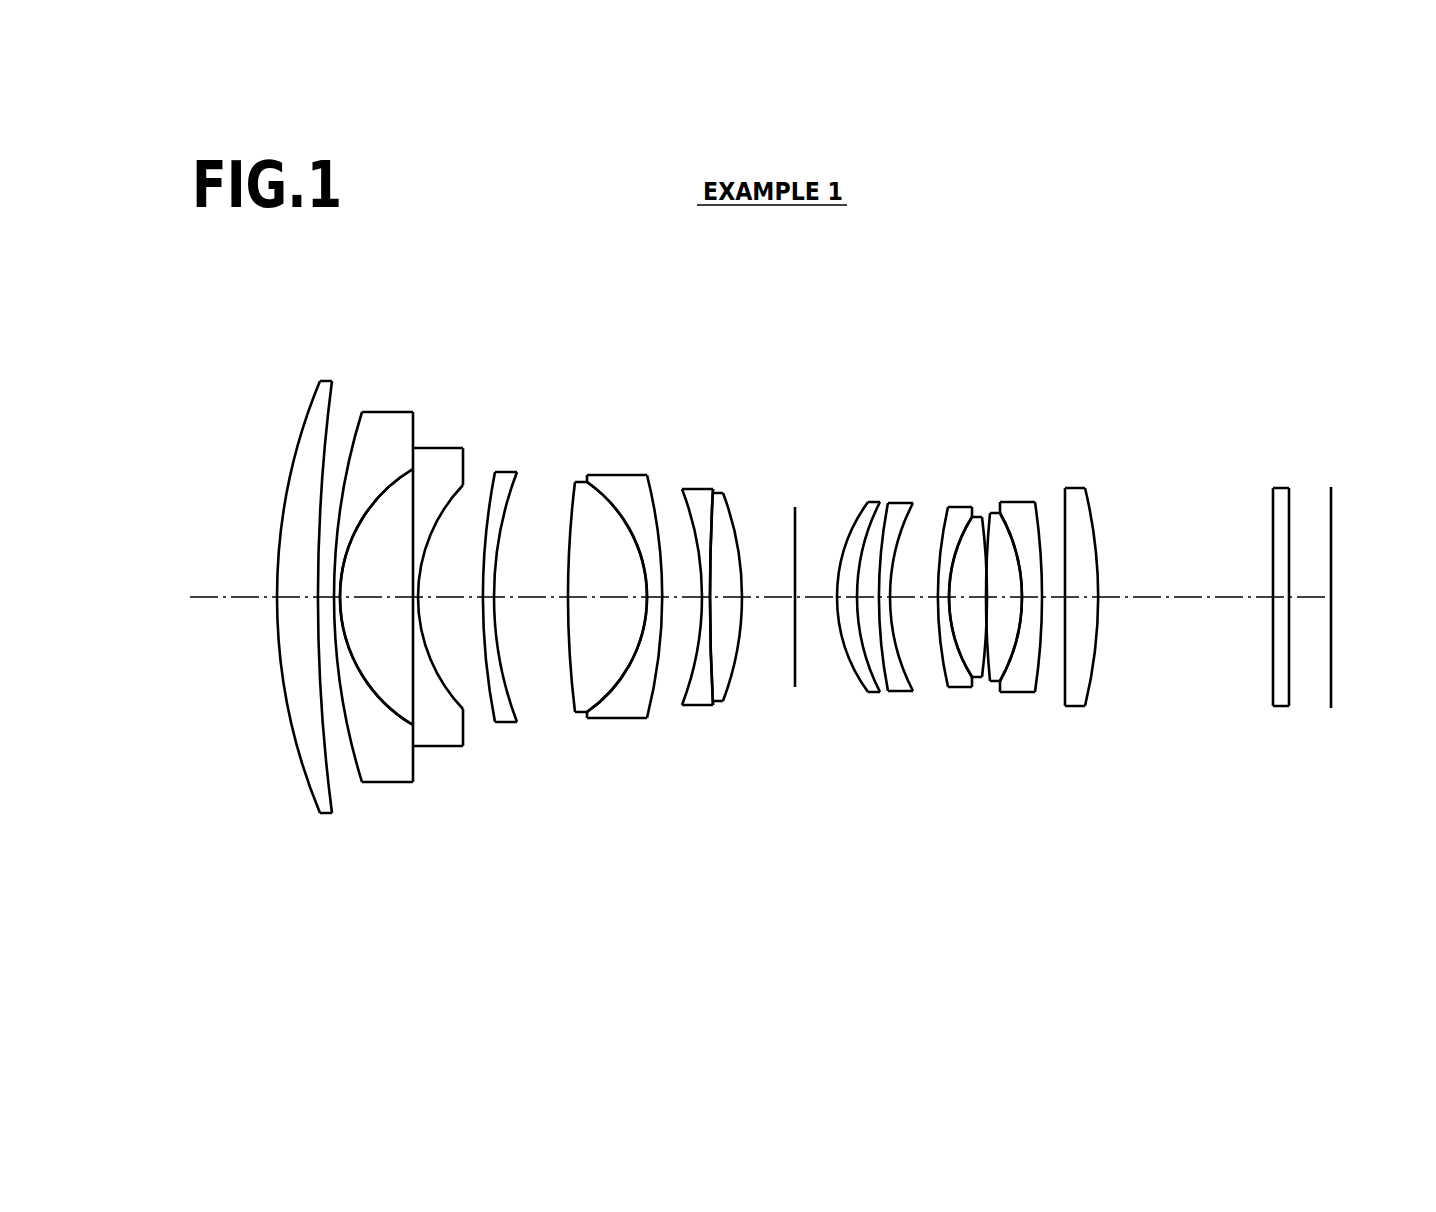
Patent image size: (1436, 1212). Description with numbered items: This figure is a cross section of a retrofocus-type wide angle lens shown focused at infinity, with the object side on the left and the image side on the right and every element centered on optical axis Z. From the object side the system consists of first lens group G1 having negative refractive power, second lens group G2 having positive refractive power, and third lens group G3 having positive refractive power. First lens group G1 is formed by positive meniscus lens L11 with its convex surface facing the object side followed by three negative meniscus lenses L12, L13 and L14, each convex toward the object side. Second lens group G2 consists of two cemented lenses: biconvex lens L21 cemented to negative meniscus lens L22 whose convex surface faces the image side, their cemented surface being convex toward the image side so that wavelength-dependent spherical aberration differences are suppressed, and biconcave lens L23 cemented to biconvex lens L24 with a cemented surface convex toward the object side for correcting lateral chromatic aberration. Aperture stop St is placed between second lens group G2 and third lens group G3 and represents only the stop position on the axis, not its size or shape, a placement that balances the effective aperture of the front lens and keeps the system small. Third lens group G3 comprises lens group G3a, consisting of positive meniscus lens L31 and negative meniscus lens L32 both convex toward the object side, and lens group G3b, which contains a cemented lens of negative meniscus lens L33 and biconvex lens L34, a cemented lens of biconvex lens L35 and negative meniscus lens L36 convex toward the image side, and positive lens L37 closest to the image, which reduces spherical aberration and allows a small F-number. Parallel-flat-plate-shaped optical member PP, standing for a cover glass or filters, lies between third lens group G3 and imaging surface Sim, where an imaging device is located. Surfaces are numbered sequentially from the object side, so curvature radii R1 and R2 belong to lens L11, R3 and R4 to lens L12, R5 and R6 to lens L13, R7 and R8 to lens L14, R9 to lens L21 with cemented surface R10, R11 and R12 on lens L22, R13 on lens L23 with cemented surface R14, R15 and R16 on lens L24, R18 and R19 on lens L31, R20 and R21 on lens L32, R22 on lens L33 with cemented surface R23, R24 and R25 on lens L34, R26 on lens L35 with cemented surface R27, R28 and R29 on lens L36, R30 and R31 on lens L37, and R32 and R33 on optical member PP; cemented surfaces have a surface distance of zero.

The optical axis Z is at (242, 592).
The first lens group G1 is at (472, 278).
The second lens group G2 is at (702, 307).
The third lens group G3 is at (1087, 307).
The 3a-th lens group G3a is at (882, 345).
The 3b-th lens group G3b is at (1087, 345).
The positive meniscus lens L11 is at (327, 381).
The negative meniscus lens L12 is at (378, 412).
The negative meniscus lens L13 is at (440, 448).
The negative meniscus lens L14 is at (500, 472).
The biconvex lens L21 is at (577, 482).
The negative meniscus lens L22 is at (615, 475).
The biconcave lens L23 is at (697, 489).
The biconvex lens L24 is at (718, 493).
The positive meniscus lens L31 is at (874, 502).
The negative meniscus lens L32 is at (900, 503).
The negative meniscus lens L33 is at (960, 507).
The biconvex lens L34 is at (977, 517).
The biconvex lens L35 is at (995, 513).
The negative meniscus lens L36 is at (1018, 502).
The lens having positive refractive power L37 is at (1073, 488).
The aperture stop St is at (795, 507).
The optical member PP is at (1280, 488).
The imaging surface Sim is at (1331, 488).
The curvature radius of first surface R1 is at (300, 756).
The curvature radius of second surface R2 is at (338, 812).
The curvature radius of third surface R3 is at (357, 772).
The curvature radius of fourth surface R4 is at (354, 675).
The curvature radius of fifth surface R5 is at (413, 710).
The curvature radius of sixth surface R6 is at (449, 697).
The curvature radius of seventh surface R7 is at (492, 722).
The curvature radius of eighth surface R8 is at (517, 700).
The curvature radius of ninth surface R9 is at (575, 712).
The curvature radius of tenth surface R10 is at (610, 690).
The curvature radius of eleventh surface R11 is at (613, 702).
The curvature radius of twelfth surface R12 is at (648, 718).
The curvature radius of thirteenth surface R13 is at (682, 705).
The curvature radius of fourteenth surface R14 is at (713, 705).
The curvature radius of fifteenth surface R15 is at (725, 732).
The curvature radius of sixteenth surface R16 is at (728, 690).
The curvature radius of eighteenth surface R18 is at (857, 675).
The curvature radius of nineteenth surface R19 is at (872, 680).
The curvature radius of twentieth surface R20 is at (880, 681).
The curvature radius of twenty-first surface R21 is at (913, 690).
The curvature radius of twenty-second surface R22 is at (948, 688).
The curvature radius of twenty-third surface R23 is at (970, 673).
The curvature radius of twenty-fourth surface R24 is at (976, 720).
The curvature radius of twenty-fifth surface R25 is at (983, 678).
The curvature radius of twenty-sixth surface R26 is at (997, 679).
The curvature radius of twenty-seventh surface R27 is at (1012, 658).
The curvature radius of twenty-eighth surface R28 is at (1054, 744).
The curvature radius of twenty-ninth surface R29 is at (1043, 660).
The curvature radius of thirtieth surface R30 is at (1068, 658).
The curvature radius of thirty-first surface R31 is at (1093, 660).
The curvature radius of thirty-second surface R32 is at (1273, 693).
The curvature radius of thirty-third surface R33 is at (1290, 693).